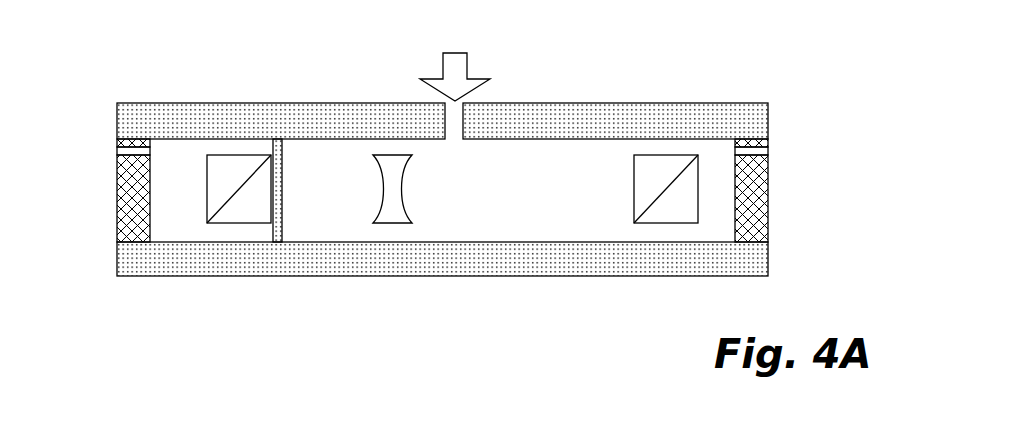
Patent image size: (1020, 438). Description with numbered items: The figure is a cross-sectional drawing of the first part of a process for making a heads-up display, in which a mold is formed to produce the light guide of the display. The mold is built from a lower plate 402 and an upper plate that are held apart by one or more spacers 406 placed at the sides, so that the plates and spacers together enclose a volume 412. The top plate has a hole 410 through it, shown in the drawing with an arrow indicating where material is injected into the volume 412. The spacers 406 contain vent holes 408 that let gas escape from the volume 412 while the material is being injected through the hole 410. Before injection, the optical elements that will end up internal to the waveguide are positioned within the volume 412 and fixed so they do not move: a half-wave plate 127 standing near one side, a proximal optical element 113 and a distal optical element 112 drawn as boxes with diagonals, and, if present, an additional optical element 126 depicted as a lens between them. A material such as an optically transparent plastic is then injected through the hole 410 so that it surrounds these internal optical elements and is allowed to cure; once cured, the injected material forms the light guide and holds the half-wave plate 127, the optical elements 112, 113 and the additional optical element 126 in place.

The lower plate 402 is at (450, 265).
The spacers 406 is at (122, 210).
The vent holes 408 is at (122, 151).
The hole 410 is at (455, 120).
The volume 412 is at (557, 229).
The distal optical element 112 is at (641, 185).
The proximal optical element 113 is at (221, 191).
The additional optical element 126 is at (398, 184).
The half-wave plate 127 is at (282, 174).